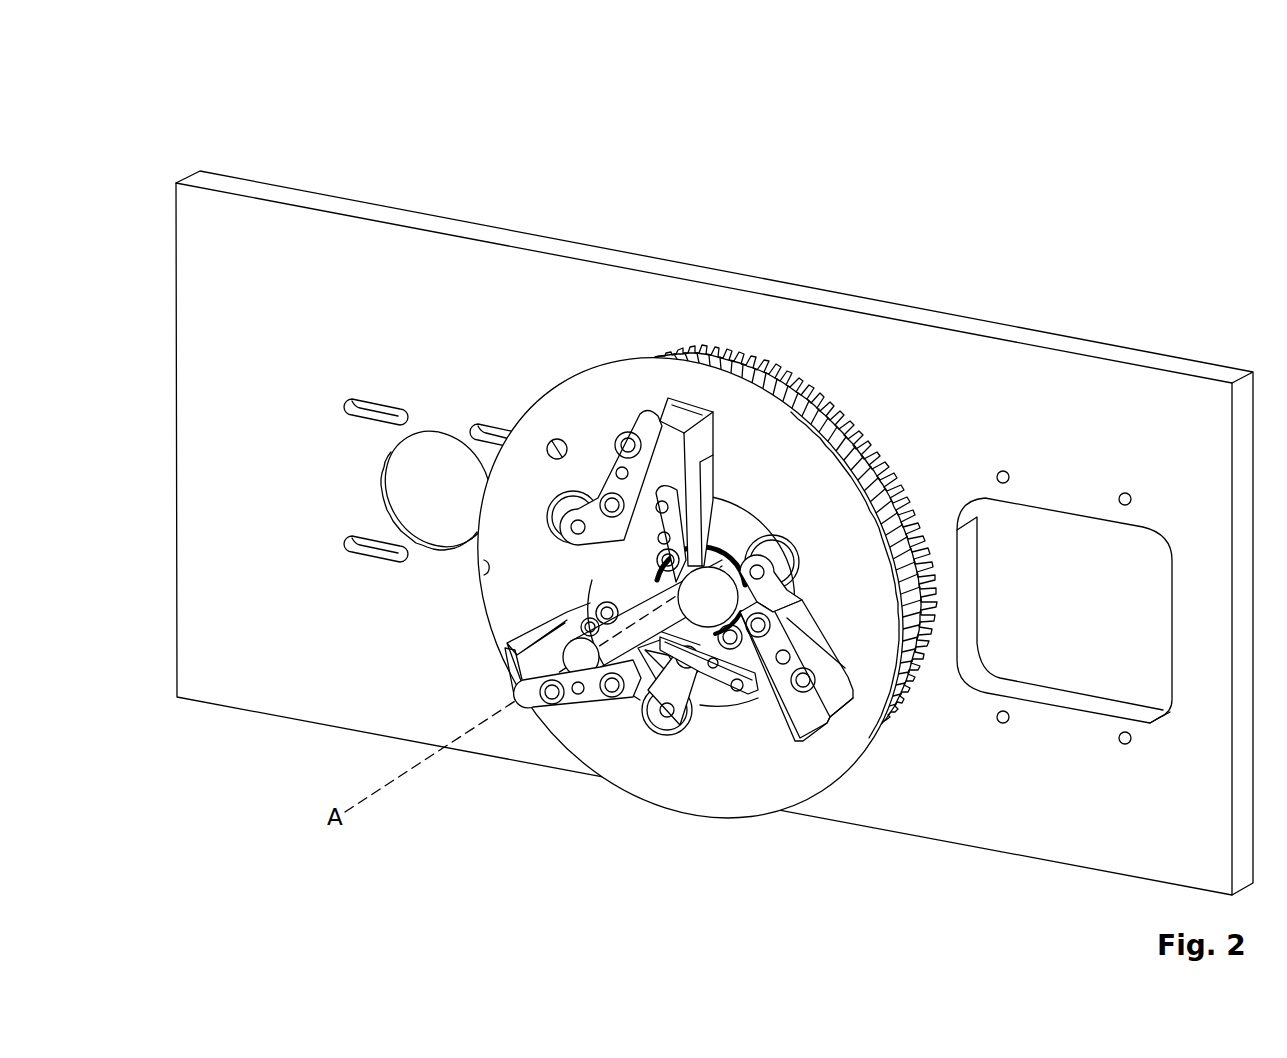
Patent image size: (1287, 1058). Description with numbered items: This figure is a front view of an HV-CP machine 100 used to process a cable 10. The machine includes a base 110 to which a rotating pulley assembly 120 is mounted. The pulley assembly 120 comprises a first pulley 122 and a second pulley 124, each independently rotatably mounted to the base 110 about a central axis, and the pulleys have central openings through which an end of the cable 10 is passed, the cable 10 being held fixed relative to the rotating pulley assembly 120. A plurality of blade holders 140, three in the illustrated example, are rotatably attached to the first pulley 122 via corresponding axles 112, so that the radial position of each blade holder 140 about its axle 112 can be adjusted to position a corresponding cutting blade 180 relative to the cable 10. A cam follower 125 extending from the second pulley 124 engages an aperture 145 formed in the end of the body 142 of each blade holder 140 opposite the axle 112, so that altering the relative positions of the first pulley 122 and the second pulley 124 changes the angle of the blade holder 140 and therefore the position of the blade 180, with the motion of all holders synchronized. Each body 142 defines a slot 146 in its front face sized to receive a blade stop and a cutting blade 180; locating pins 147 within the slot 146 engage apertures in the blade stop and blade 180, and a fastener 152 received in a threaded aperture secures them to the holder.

The HV-CP machine 100 is at (238, 72).
The base 110 is at (1150, 412).
The axle 112 is at (762, 716).
The rotating pulley assembly 120 is at (798, 338).
The first pulley 122 is at (858, 510).
The second pulley 124 is at (817, 380).
The cam follower 125 is at (707, 353).
The blade holder 140 is at (822, 760).
The body 142 is at (658, 470).
The aperture 145 is at (672, 380).
The slot 146 is at (672, 500).
The locating pin 147 is at (676, 737).
The fastener 152 is at (647, 708).
The cutting blade 180 is at (588, 700).
The cable 10 is at (527, 700).